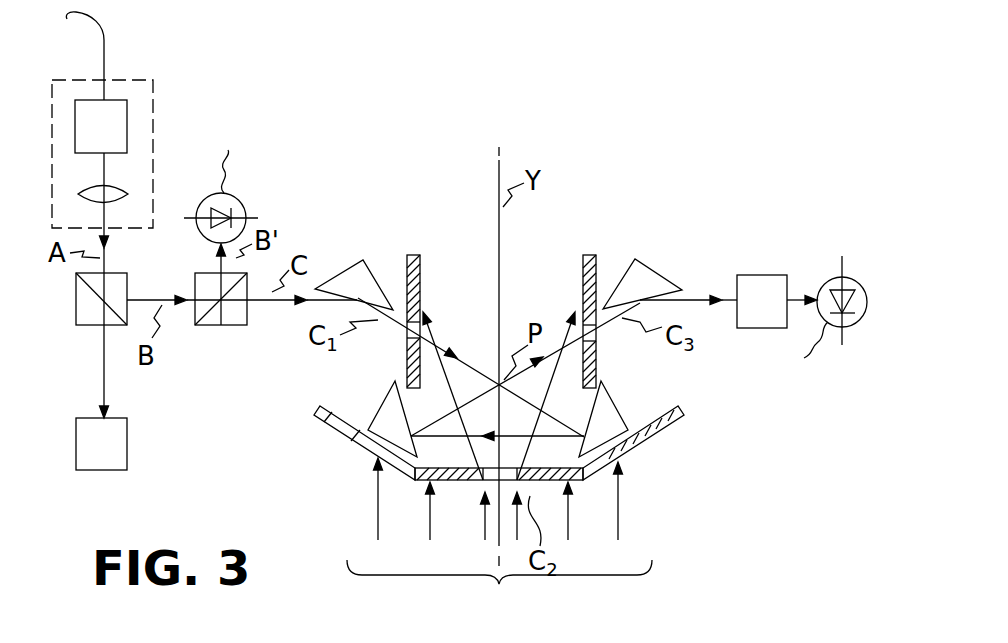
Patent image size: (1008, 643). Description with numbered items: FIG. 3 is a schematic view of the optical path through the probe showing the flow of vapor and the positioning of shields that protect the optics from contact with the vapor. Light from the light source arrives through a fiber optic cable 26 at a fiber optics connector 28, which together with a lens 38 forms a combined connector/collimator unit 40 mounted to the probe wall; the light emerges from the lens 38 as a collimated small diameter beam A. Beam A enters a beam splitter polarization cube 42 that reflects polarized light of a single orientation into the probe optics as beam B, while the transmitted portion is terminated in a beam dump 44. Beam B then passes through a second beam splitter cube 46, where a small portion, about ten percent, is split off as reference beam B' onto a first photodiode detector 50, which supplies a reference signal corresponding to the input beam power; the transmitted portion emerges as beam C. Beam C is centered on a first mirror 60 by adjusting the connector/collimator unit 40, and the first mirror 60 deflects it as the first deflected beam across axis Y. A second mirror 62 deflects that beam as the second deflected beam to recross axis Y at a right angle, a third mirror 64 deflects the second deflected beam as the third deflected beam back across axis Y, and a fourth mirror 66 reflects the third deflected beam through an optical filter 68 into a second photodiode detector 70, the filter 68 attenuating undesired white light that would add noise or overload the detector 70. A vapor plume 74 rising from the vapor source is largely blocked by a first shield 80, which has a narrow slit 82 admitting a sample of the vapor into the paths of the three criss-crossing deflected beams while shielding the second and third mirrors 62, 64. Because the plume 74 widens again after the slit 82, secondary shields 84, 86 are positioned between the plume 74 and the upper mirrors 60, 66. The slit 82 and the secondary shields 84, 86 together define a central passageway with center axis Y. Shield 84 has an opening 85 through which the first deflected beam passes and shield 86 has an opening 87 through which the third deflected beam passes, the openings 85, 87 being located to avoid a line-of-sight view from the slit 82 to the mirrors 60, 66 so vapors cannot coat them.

The fiber optic cable 26 is at (113, 52).
The connector/collimator unit 40 is at (122, 132).
The fiber optics connector 28 is at (140, 108).
The lens 38 is at (141, 183).
The beam splitter polarization cube 42 is at (119, 327).
The beam dump 44 is at (134, 438).
The second beam splitter cube 46 is at (243, 322).
The first photodiode detector 50 is at (234, 195).
The first mirror 60 is at (350, 259).
The second mirror 62 is at (640, 411).
The third mirror 64 is at (354, 414).
The fourth mirror 66 is at (662, 267).
The optical filter 68 is at (769, 277).
The second photodiode detector 70 is at (846, 291).
The vapor plume 74 is at (499, 543).
The first shield 80 is at (509, 473).
The slit 82 is at (492, 482).
The secondary shield 84 is at (396, 287).
The opening 85 is at (385, 355).
The secondary shield 86 is at (610, 291).
The opening 87 is at (622, 351).